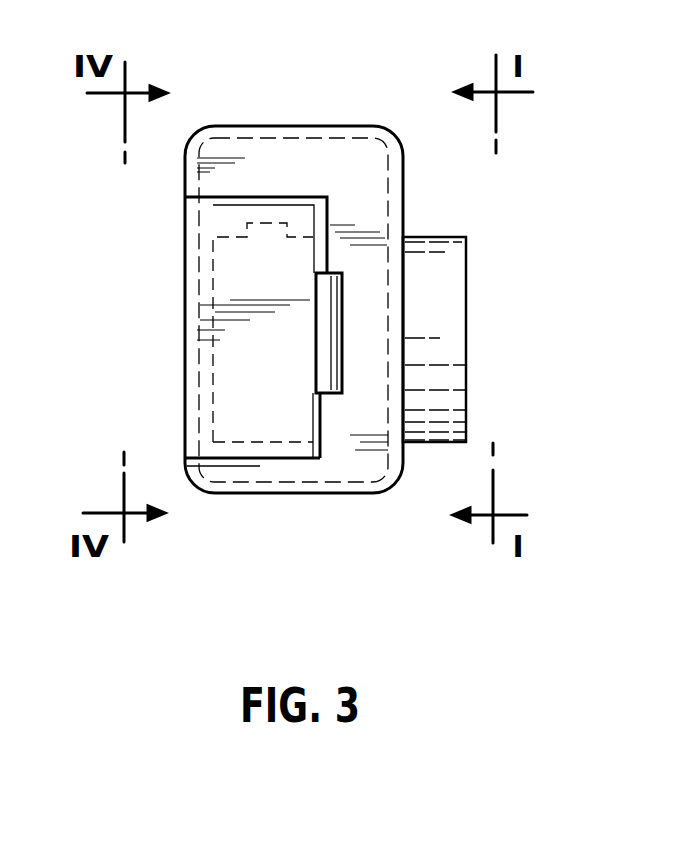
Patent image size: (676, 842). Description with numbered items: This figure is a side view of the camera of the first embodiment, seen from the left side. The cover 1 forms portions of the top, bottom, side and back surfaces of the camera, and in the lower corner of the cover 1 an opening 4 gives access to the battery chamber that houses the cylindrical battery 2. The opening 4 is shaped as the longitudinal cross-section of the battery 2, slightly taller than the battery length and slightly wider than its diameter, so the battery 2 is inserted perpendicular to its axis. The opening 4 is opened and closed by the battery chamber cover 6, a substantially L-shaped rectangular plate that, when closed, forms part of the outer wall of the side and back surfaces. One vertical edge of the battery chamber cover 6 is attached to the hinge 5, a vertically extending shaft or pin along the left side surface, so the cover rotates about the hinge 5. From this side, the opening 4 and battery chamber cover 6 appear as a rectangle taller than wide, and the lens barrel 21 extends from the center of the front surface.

The cover 1 is at (395, 478).
The battery 2 is at (183, 285).
The opening 4 is at (207, 228).
The hinge 5 is at (343, 395).
The battery chamber cover 6 is at (227, 450).
The lens barrel 21 is at (435, 445).